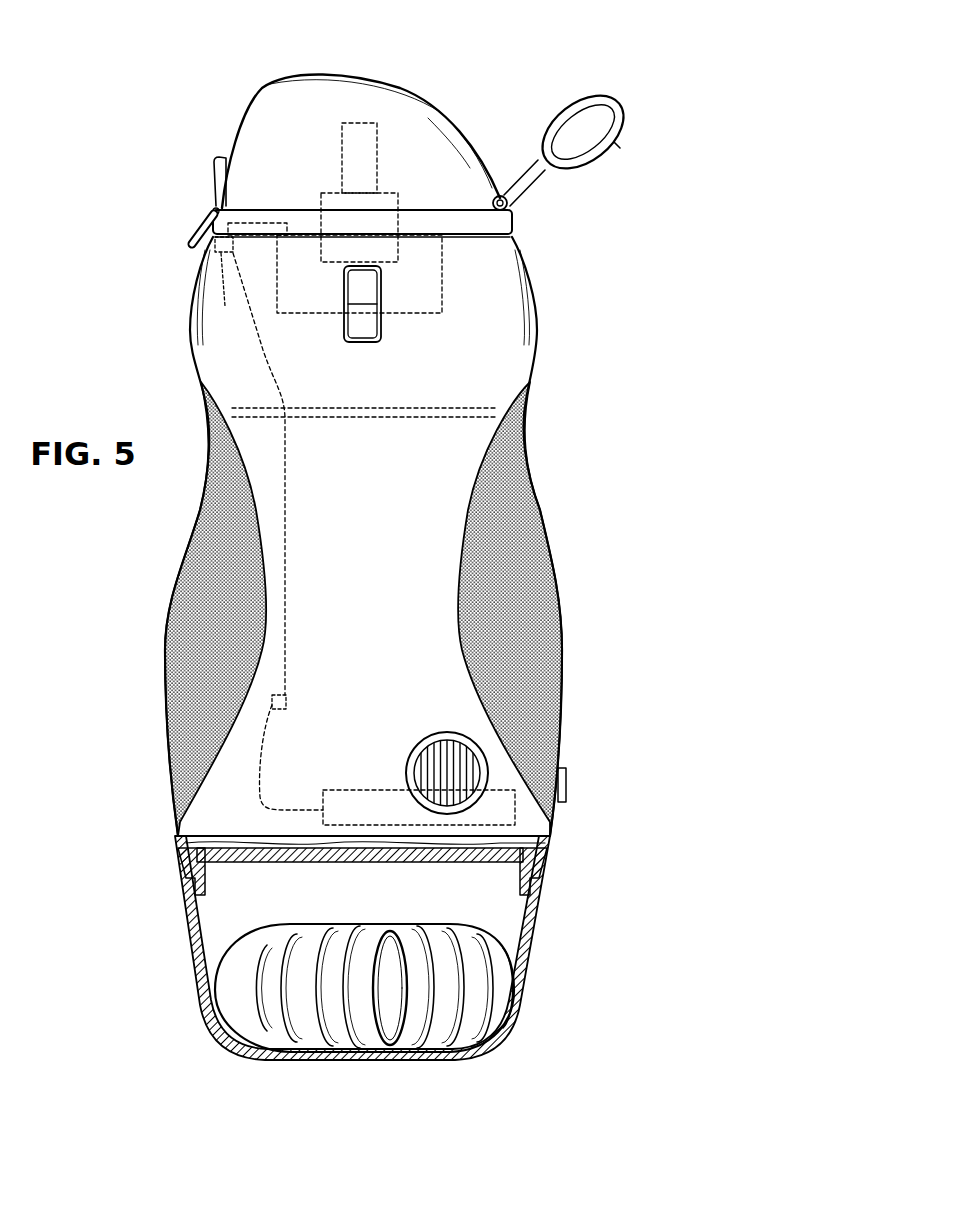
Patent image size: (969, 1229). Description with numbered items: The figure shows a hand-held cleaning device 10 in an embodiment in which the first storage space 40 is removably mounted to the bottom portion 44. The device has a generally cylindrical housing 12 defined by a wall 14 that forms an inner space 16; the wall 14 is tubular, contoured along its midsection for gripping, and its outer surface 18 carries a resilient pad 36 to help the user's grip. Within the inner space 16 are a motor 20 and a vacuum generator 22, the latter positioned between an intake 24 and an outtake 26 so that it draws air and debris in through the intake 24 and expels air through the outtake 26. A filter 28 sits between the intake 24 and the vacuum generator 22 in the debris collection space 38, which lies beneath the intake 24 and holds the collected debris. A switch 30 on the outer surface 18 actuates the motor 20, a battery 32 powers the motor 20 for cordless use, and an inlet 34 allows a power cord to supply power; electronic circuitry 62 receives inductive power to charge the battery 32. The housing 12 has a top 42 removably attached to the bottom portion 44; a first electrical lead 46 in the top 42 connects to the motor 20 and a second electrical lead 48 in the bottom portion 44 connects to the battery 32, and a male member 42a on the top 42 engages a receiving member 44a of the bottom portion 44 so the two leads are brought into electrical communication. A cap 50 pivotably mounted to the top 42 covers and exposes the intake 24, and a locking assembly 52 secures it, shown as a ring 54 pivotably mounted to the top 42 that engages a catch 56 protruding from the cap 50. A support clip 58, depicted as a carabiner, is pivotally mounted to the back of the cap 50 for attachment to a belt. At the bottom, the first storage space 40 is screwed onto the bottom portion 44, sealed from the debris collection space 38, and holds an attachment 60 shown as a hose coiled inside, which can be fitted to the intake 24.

The hand-held cleaning device 10 is at (570, 78).
The housing 12 is at (622, 482).
The wall 14 is at (190, 345).
The inner space 16 is at (492, 360).
The outer surface 18 is at (372, 386).
The motor 20 is at (443, 284).
The vacuum generator 22 is at (398, 249).
The intake 24 is at (368, 150).
The outtake 26 is at (440, 734).
The filter 28 is at (437, 418).
The switch 30 is at (345, 328).
The battery 32 is at (382, 790).
The inlet 34 is at (567, 786).
The resilient pad 36 is at (545, 683).
The debris collection space 38 is at (443, 638).
The first storage space 40 is at (508, 916).
The top 42 is at (390, 58).
The male member 42a is at (233, 252).
The bottom portion 44 is at (625, 848).
The receiving member 44a is at (221, 293).
The first electrical lead 46 is at (258, 222).
The second electrical lead 48 is at (286, 510).
The cap 50 is at (416, 92).
The locking assembly 52 is at (170, 210).
The ring 54 is at (193, 240).
The catch 56 is at (216, 178).
The support clip 58 is at (622, 120).
The attachment 60 is at (493, 960).
The electronic circuitry 62 is at (288, 702).